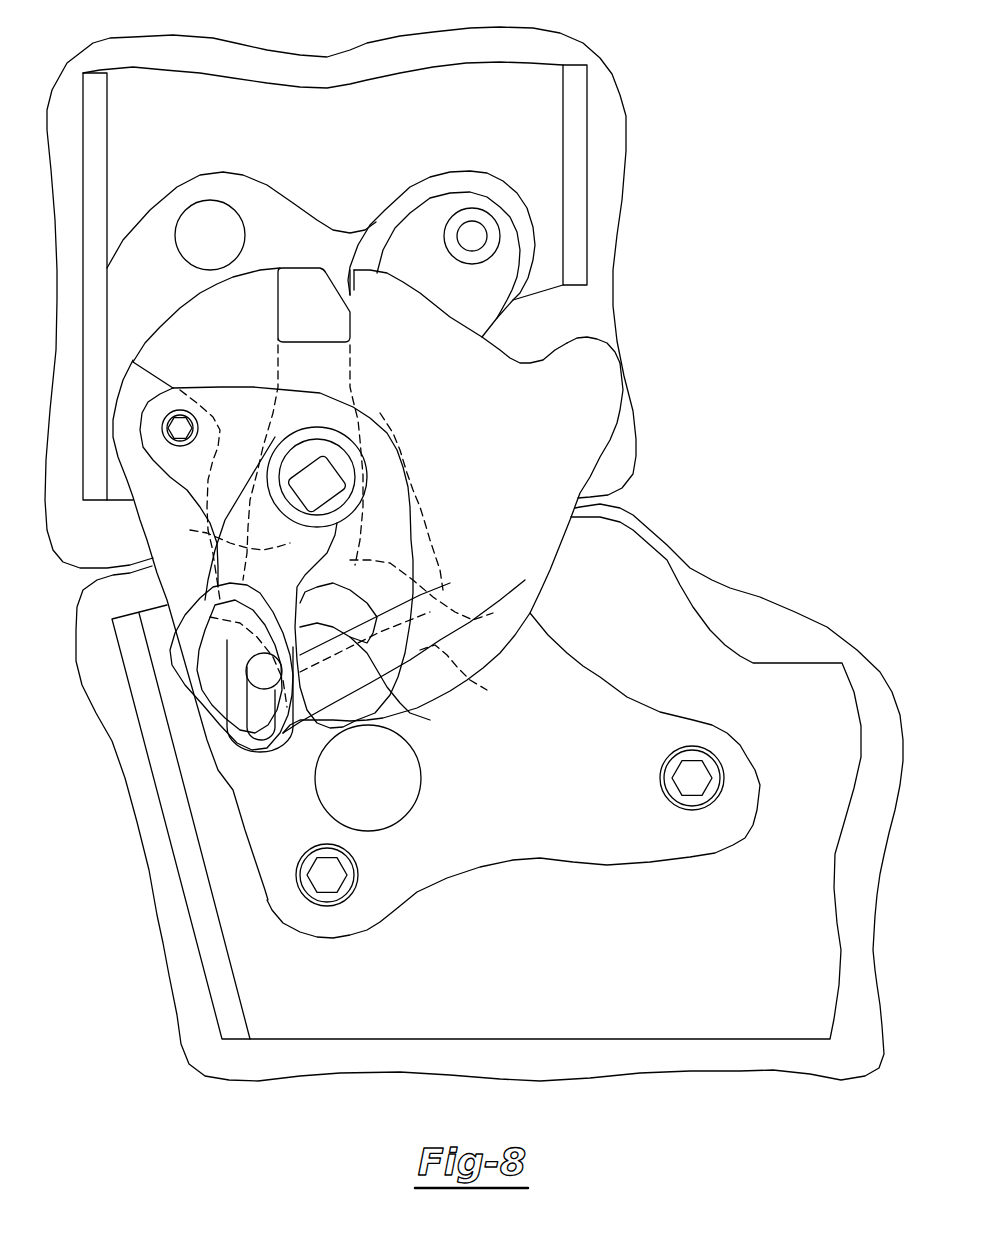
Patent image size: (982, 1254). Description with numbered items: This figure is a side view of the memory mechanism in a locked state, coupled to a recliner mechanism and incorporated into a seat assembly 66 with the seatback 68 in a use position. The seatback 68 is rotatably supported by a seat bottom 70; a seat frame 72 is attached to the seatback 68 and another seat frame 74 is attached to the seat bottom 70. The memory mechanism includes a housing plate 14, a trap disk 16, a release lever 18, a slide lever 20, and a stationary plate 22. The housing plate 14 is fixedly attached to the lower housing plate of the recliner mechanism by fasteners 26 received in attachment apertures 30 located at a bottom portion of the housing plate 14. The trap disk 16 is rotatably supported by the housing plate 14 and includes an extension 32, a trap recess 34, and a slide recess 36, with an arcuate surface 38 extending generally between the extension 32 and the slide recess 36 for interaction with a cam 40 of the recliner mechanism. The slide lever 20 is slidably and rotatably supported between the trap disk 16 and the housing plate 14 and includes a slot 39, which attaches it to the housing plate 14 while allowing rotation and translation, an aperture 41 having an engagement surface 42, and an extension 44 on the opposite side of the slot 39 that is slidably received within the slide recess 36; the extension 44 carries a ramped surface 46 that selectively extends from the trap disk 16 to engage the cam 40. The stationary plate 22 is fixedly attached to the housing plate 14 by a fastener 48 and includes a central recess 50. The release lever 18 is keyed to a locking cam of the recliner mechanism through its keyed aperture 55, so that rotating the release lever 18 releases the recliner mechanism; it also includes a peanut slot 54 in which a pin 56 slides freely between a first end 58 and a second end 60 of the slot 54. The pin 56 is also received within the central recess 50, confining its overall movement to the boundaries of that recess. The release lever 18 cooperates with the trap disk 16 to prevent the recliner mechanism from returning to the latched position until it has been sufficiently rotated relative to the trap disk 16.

The housing plate 14 is at (523, 910).
The trap disk 16 is at (653, 483).
The release lever 18 is at (247, 367).
The slide lever 20 is at (257, 208).
The stationary plate 22 is at (467, 450).
The fasteners 26 is at (323, 880).
The attachment apertures 30 is at (357, 881).
The extension 32 is at (600, 363).
The trap recess 34 is at (425, 604).
The slide recess 36 is at (351, 300).
The arcuate surface 38 is at (457, 316).
The slot 39 is at (213, 535).
The cam 40 is at (580, 307).
The aperture 41 is at (470, 687).
The engagement surface 42 is at (333, 632).
The extension 44 is at (310, 286).
The ramped surface 46 is at (348, 308).
The fastener 48 is at (178, 427).
The central recess 50 is at (436, 721).
The peanut slot 54 is at (247, 641).
The keyed aperture 55 is at (350, 459).
The pin 56 is at (265, 674).
The first end 58 is at (235, 585).
The second end 60 is at (250, 717).
The seat assembly 66 is at (787, 240).
The seatback 68 is at (680, 50).
The seat bottom 70 is at (827, 523).
The seat frame 72 is at (187, 97).
The seat frame 74 is at (668, 1030).